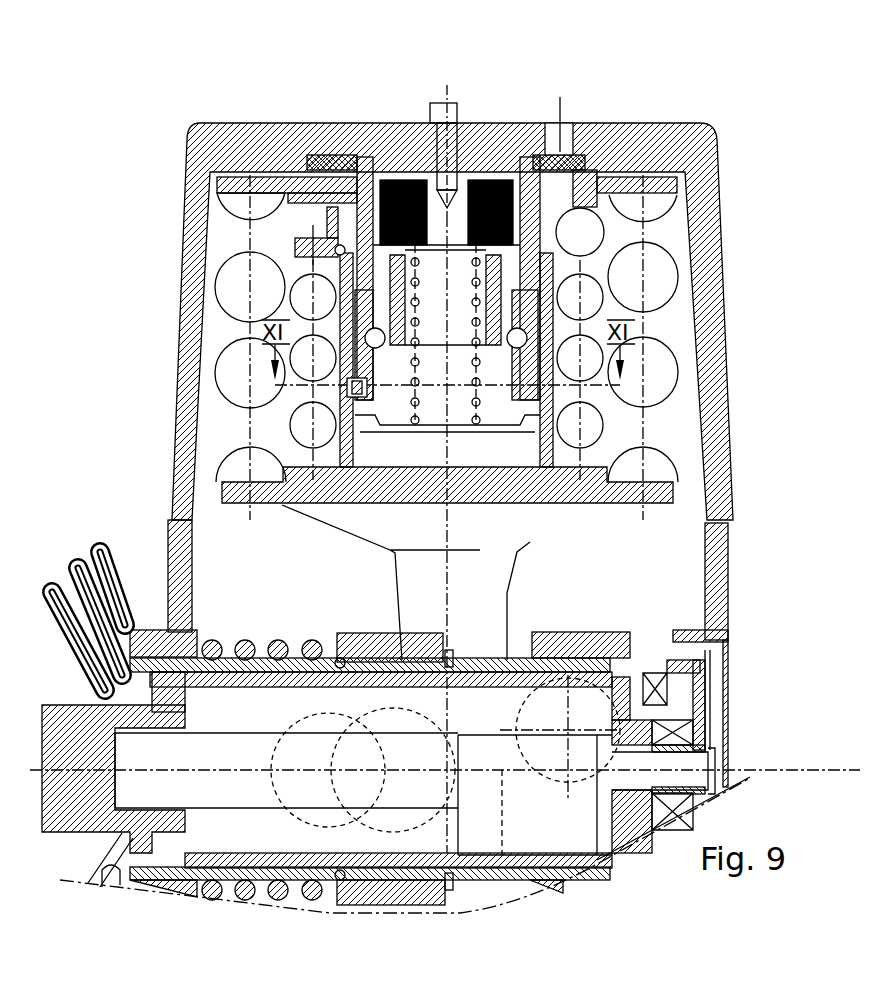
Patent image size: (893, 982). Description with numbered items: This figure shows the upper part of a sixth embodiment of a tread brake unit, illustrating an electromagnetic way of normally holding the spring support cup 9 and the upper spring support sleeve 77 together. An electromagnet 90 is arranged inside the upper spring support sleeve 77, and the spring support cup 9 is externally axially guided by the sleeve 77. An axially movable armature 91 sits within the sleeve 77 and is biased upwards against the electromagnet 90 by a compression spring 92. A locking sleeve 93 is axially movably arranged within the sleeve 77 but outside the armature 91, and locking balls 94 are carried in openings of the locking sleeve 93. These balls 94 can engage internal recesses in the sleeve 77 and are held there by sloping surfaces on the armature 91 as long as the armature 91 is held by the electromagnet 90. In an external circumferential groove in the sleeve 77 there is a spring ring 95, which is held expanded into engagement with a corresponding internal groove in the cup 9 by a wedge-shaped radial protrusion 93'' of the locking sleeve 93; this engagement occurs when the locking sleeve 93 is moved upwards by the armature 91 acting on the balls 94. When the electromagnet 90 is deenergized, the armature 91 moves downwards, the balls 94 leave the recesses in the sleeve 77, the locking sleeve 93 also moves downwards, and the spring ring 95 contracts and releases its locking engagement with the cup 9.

The electromagnet 90 is at (493, 170).
The upper spring support sleeve 77 is at (602, 185).
The armature 91 is at (490, 275).
The locking balls 94 is at (373, 340).
The locking sleeve 93 is at (545, 345).
The wedge-shaped radial protrusion 93'' is at (528, 347).
The spring ring 95 is at (355, 385).
The spring support cup 9 is at (530, 542).
The compression spring 92 is at (478, 400).